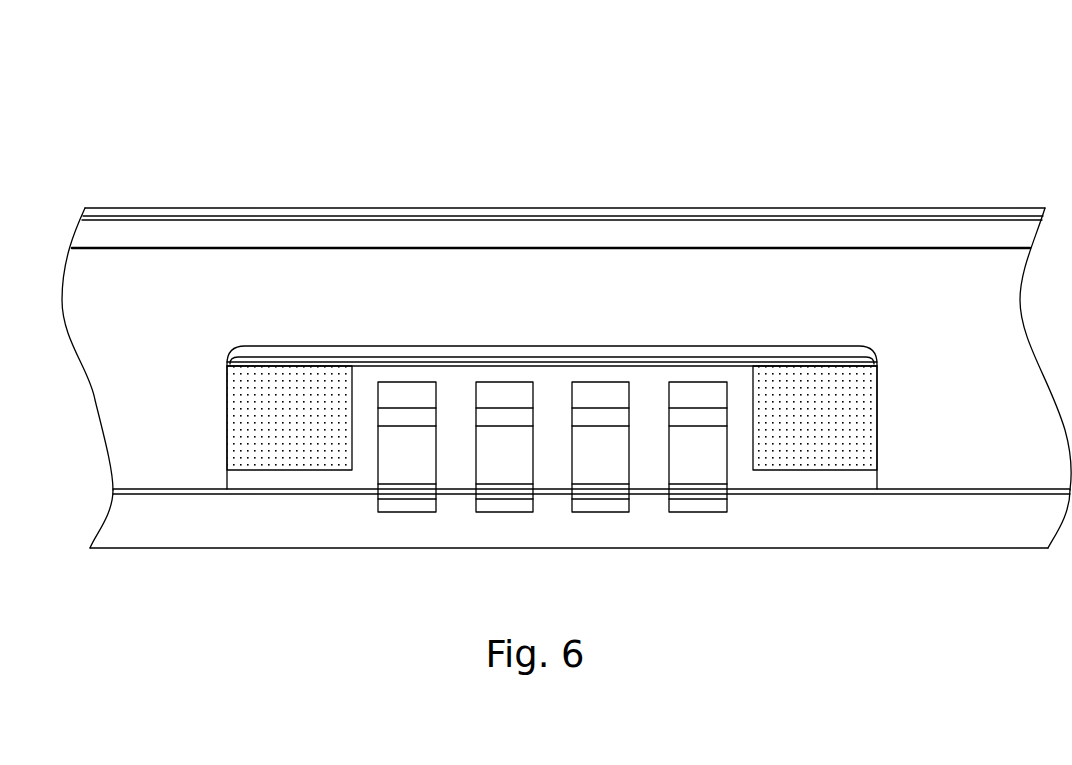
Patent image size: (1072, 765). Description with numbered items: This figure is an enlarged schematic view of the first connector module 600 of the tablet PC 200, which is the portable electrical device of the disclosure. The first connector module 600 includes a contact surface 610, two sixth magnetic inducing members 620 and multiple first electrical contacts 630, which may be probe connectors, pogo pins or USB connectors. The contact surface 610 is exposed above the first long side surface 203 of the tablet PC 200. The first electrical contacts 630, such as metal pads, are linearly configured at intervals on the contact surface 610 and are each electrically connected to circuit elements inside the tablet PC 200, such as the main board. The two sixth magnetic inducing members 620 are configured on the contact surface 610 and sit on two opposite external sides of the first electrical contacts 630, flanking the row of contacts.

The tablet PC 200 is at (53, 134).
The first long side surface 203 is at (574, 522).
The first connector module 600 is at (552, 282).
The contact surface 610 is at (552, 302).
The sixth magnetic inducing member 620 is at (552, 292).
The first electrical contacts 630 is at (552, 313).